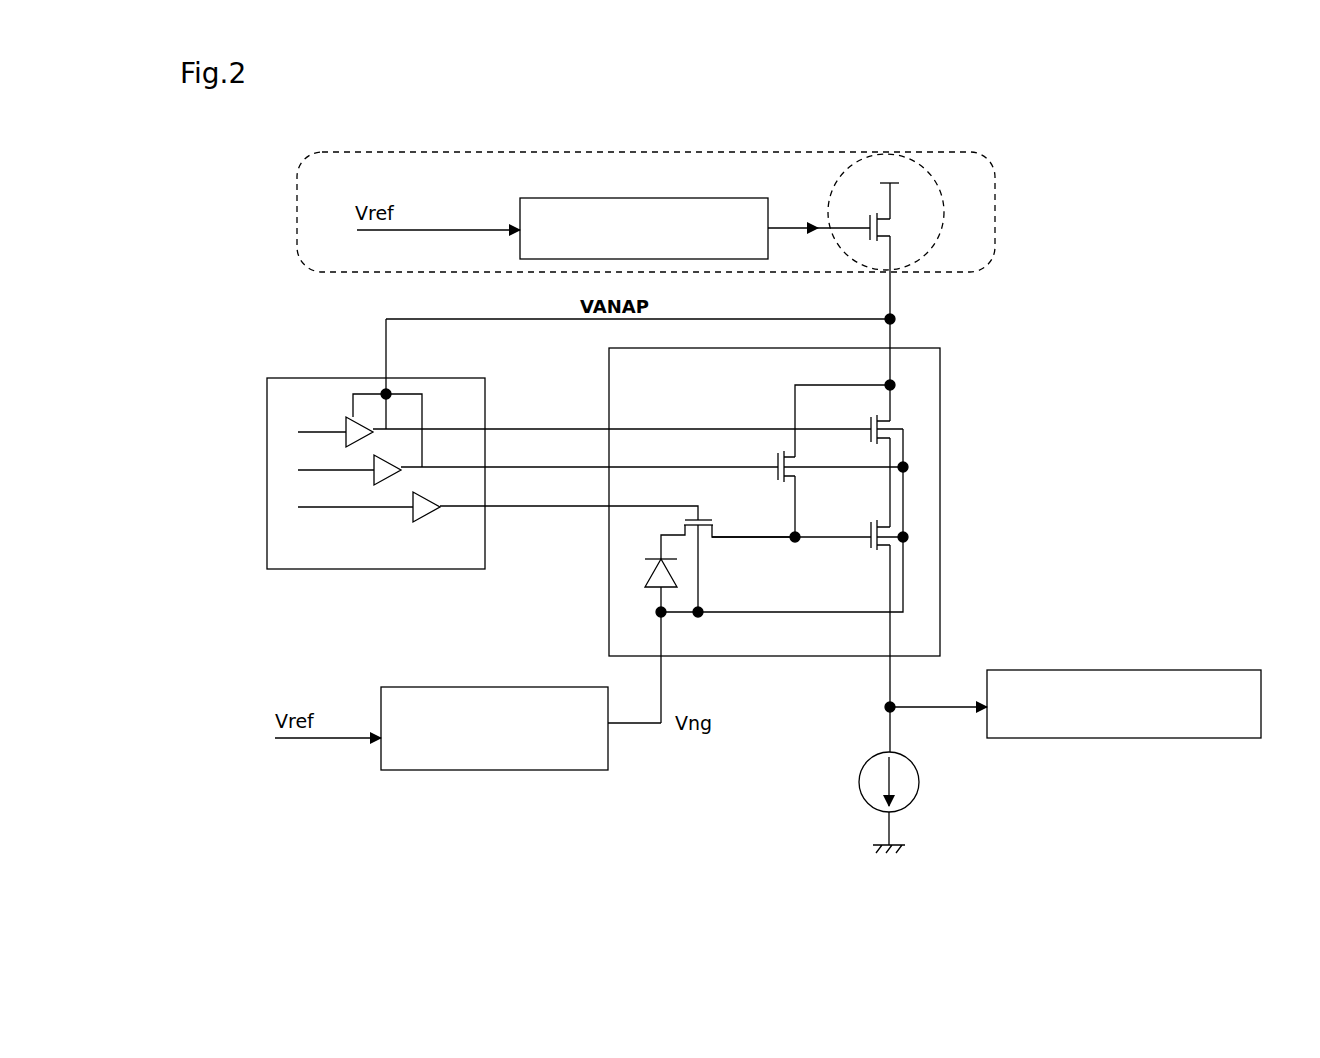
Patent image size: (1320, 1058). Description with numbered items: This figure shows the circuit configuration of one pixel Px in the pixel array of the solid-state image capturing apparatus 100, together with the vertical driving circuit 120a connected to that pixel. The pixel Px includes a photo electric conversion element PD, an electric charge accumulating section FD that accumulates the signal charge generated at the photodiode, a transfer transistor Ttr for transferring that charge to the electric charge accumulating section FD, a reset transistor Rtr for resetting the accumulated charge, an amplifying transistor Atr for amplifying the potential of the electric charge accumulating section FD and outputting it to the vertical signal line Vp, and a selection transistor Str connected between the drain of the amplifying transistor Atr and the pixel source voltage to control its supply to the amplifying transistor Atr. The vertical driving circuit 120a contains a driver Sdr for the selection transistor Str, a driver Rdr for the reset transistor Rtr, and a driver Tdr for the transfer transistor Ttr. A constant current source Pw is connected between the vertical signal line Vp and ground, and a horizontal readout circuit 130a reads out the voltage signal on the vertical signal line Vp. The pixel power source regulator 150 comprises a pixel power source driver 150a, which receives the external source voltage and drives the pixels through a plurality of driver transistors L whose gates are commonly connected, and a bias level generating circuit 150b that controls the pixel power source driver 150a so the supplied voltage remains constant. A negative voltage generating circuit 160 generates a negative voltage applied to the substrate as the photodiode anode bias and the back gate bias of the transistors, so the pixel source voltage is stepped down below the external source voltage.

The solid-state image capturing apparatus 100 is at (626, 877).
The vertical driving circuit 120a is at (275, 408).
The horizontal readout circuit 130a is at (1100, 738).
The pixel power source regulator 150 is at (798, 153).
The pixel power source driver 150a is at (928, 173).
The bias level generating circuit 150b is at (640, 205).
The negative voltage generating circuit 160 is at (545, 772).
The driver transistors L is at (900, 203).
The pixel Px is at (940, 365).
The selection transistor Str is at (893, 421).
The reset transistor Rtr is at (797, 477).
The amplifying transistor Atr is at (892, 527).
The transfer transistor Ttr is at (706, 541).
The electric charge accumulating section FD is at (797, 545).
The photo electric conversion element PD is at (630, 605).
The vertical signal line Vp is at (893, 680).
The constant current source Pw is at (905, 783).
The driver Sdr is at (347, 428).
The driver Rdr is at (374, 463).
The driver Tdr is at (413, 512).